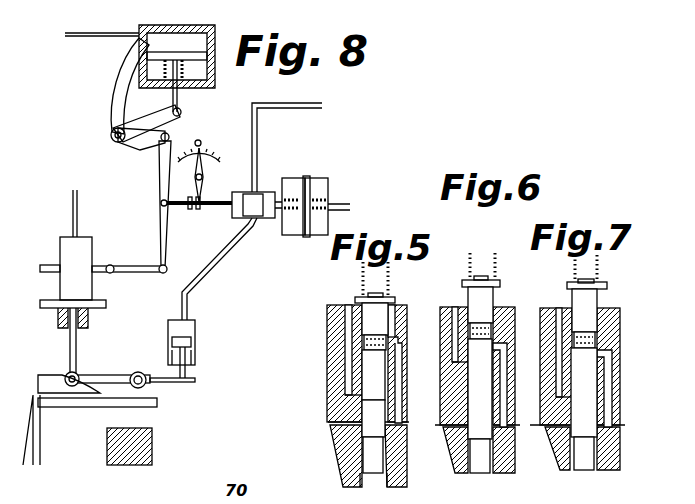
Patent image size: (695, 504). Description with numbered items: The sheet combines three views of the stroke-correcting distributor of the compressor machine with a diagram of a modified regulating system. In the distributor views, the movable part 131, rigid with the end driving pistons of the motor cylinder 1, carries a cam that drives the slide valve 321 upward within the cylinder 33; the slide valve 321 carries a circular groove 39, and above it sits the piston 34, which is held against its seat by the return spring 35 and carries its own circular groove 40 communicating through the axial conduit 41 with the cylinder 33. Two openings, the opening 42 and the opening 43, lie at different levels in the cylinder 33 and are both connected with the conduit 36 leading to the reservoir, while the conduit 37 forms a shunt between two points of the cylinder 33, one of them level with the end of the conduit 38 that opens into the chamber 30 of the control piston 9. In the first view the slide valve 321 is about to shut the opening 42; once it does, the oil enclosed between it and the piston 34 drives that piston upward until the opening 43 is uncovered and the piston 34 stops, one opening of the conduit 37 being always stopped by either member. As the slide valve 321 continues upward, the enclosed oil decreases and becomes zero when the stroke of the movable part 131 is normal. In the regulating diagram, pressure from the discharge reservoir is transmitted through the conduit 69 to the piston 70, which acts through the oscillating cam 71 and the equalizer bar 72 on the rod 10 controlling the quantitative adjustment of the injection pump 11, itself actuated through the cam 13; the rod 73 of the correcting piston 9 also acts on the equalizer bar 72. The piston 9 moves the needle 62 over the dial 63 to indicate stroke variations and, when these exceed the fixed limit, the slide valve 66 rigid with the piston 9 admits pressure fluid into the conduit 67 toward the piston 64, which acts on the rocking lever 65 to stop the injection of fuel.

In FIG. 8, the cylinder 1 is at (107, 446).
In FIG. 8, the control piston 9 is at (320, 180).
In FIG. 8, the quantitative adjustment rod 10 is at (98, 266).
In FIG. 8, the injection pump 11 is at (66, 252).
In FIG. 8, the cam 13 is at (45, 383).
In FIG. 8, the movable part 131 is at (150, 407).
In FIG. 8, the chamber 30 is at (296, 178).
In FIG. 5, the slide valve 321 is at (367, 428).
In FIG. 7, the slide valve 321 is at (585, 440).
In FIG. 5, the cylinder 33 is at (378, 390).
In FIG. 7, the cylinder 33 is at (598, 370).
In FIG. 5, the piston 34 is at (360, 312).
In FIG. 6, the piston 34 is at (472, 306).
In FIG. 7, the piston 34 is at (578, 304).
In FIG. 5, the return spring 35 is at (392, 276).
In FIG. 7, the return spring 35 is at (600, 270).
In FIG. 5, the conduit 36 is at (345, 325).
In FIG. 6, the conduit 36 is at (507, 345).
In FIG. 7, the conduit 36 is at (564, 352).
In FIG. 5, the conduit 37 is at (395, 385).
In FIG. 6, the conduit 37 is at (508, 385).
In FIG. 7, the conduit 37 is at (612, 408).
In FIG. 5, the conduit 38 is at (336, 425).
In FIG. 6, the conduit 38 is at (452, 440).
In FIG. 7, the conduit 38 is at (556, 430).
In FIG. 5, the circular groove 39 is at (386, 450).
In FIG. 6, the circular groove 39 is at (492, 455).
In FIG. 7, the circular groove 39 is at (596, 452).
In FIG. 5, the circular groove 40 is at (398, 335).
In FIG. 6, the circular groove 40 is at (498, 316).
In FIG. 7, the circular groove 40 is at (612, 318).
In FIG. 5, the axial conduit 41 is at (340, 380).
In FIG. 6, the axial conduit 41 is at (500, 330).
In FIG. 7, the axial conduit 41 is at (612, 340).
In FIG. 5, the opening 42 is at (330, 408).
In FIG. 6, the opening 42 is at (500, 430).
In FIG. 7, the opening 42 is at (577, 447).
In FIG. 5, the opening 43 is at (335, 366).
In FIG. 6, the opening 43 is at (508, 400).
In FIG. 7, the opening 43 is at (556, 366).
In FIG. 8, the needle 62 is at (203, 168).
In FIG. 8, the dial 63 is at (212, 160).
In FIG. 8, the piston 64 is at (191, 345).
In FIG. 8, the rocking lever 65 is at (160, 372).
In FIG. 8, the slide valve 66 is at (254, 218).
In FIG. 8, the conduit 67 is at (220, 280).
In FIG. 8, the conduit 69 is at (78, 40).
In FIG. 8, the piston 70 is at (197, 80).
In FIG. 8, the cam 71 is at (150, 140).
In FIG. 8, the equalizer bar 72 is at (160, 178).
In FIG. 8, the rod 73 is at (210, 210).